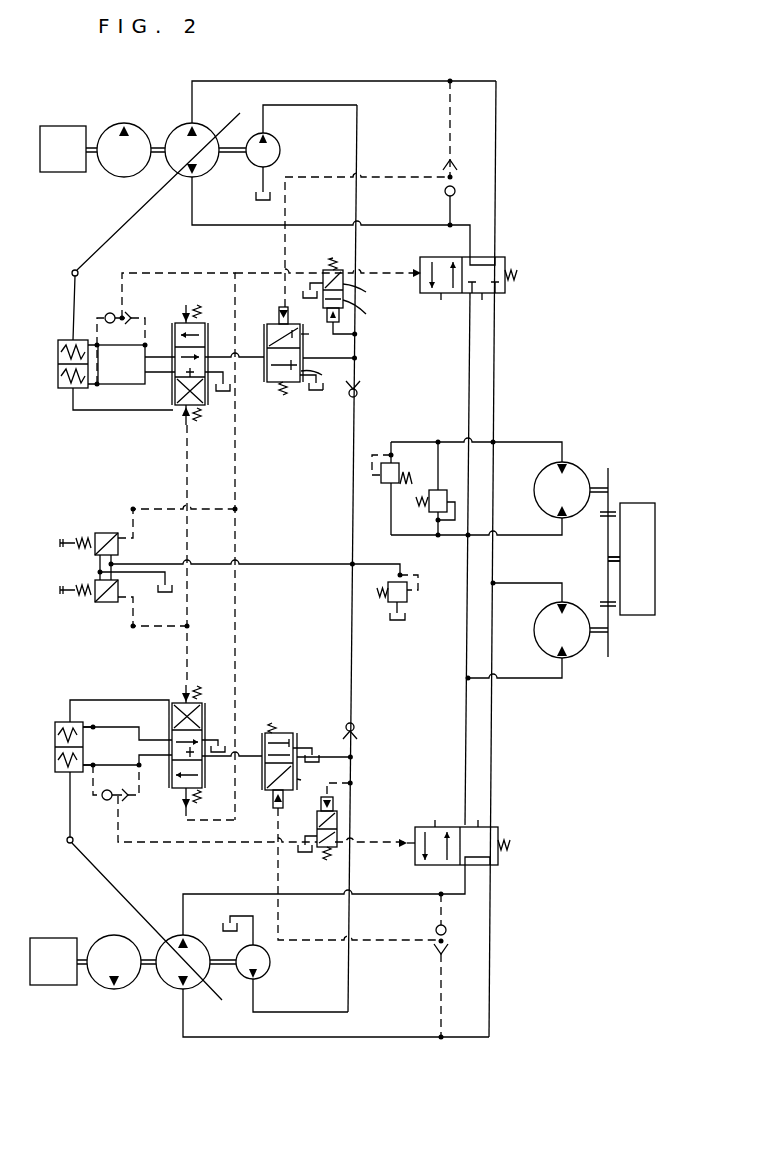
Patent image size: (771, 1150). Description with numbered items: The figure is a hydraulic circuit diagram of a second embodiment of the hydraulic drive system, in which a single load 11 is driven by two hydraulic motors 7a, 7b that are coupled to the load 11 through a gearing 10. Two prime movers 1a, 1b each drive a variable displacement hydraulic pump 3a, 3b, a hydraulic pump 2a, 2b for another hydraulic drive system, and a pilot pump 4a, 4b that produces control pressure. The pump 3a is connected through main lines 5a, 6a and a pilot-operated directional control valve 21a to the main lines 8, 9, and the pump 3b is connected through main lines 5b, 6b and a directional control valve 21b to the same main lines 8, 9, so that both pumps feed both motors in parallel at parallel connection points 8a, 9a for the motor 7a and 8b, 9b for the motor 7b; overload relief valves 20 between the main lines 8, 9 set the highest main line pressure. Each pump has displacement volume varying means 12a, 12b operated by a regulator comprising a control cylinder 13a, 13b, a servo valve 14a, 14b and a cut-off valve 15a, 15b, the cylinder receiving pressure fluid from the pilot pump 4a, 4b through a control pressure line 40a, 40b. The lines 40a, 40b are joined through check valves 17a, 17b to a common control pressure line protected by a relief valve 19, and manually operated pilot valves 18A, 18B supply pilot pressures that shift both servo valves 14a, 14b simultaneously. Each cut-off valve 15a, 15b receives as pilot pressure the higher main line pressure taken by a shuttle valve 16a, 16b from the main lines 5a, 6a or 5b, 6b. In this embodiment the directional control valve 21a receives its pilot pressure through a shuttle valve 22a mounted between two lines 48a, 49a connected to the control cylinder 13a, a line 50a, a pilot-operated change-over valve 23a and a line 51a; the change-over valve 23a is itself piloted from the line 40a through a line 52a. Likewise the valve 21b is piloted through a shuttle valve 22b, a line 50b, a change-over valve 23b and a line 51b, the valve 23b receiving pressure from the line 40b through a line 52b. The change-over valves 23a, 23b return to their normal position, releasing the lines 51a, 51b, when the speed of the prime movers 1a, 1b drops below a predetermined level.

The prime mover 1a is at (64, 126).
The hydraulic pump 2a is at (118, 123).
The variable displacement hydraulic pump 3a is at (181, 128).
The pilot pump 4a is at (278, 143).
The main line 5a is at (388, 83).
The main line 6a is at (390, 226).
The hydraulic motor 7a is at (574, 467).
The parallel connection point 8a is at (495, 441).
The parallel connection point 9a is at (466, 538).
The main line 8 is at (494, 366).
The main line 9 is at (470, 367).
The gearing 10 is at (609, 641).
The load 11 is at (633, 503).
The displacement volume varying means 12a is at (131, 207).
The control cylinder 13a is at (61, 340).
The servo valve 14a is at (181, 322).
The cut-off valve 15a is at (272, 325).
The shuttle valve 16a is at (446, 172).
The check valve 17a is at (359, 392).
The manually operated pilot valve 18A is at (92, 532).
The manually operated pilot valve 18B is at (100, 605).
The relief valve 19 is at (408, 598).
The overload relief valve 20 is at (389, 454).
The directional control valve 21a is at (507, 266).
The shuttle valve 22a is at (121, 314).
The change-over valve 23a is at (327, 264).
The control pressure line 40a is at (359, 205).
The line 48a is at (136, 364).
The line 49a is at (104, 385).
The line 50a is at (178, 271).
The line 51a is at (380, 272).
The line 52a is at (346, 340).
The prime mover 1b is at (52, 986).
The hydraulic pump 2b is at (104, 988).
The variable displacement hydraulic pump 3b is at (166, 986).
The pilot pump 4b is at (266, 976).
The main line 5b is at (375, 1037).
The main line 6b is at (362, 894).
The hydraulic motor 7b is at (580, 660).
The parallel connection point 8b is at (495, 582).
The parallel connection point 9b is at (466, 679).
The displacement volume varying means 12b is at (108, 883).
The control cylinder 13b is at (58, 721).
The servo valve 14b is at (175, 702).
The cut-off valve 15b is at (290, 731).
The shuttle valve 16b is at (436, 945).
The check valve 17b is at (356, 722).
The directional control valve 21b is at (500, 836).
The shuttle valve 22b is at (120, 802).
The change-over valve 23b is at (320, 851).
The control pressure line 40b is at (348, 987).
The line 50b is at (218, 843).
The line 51b is at (357, 843).
The line 52b is at (345, 778).